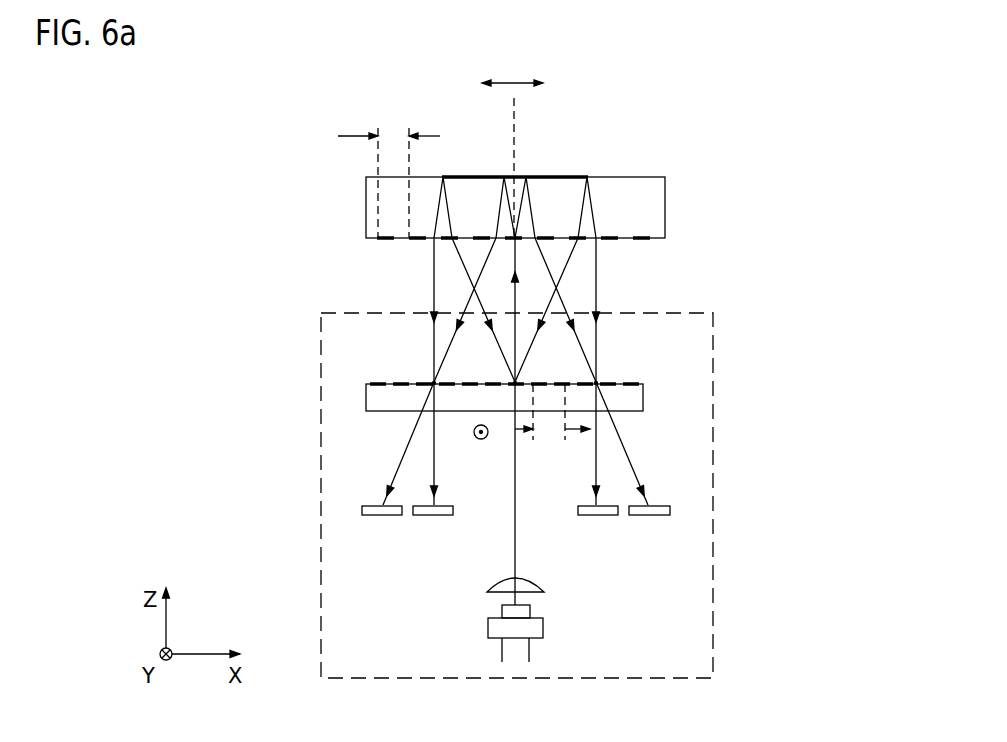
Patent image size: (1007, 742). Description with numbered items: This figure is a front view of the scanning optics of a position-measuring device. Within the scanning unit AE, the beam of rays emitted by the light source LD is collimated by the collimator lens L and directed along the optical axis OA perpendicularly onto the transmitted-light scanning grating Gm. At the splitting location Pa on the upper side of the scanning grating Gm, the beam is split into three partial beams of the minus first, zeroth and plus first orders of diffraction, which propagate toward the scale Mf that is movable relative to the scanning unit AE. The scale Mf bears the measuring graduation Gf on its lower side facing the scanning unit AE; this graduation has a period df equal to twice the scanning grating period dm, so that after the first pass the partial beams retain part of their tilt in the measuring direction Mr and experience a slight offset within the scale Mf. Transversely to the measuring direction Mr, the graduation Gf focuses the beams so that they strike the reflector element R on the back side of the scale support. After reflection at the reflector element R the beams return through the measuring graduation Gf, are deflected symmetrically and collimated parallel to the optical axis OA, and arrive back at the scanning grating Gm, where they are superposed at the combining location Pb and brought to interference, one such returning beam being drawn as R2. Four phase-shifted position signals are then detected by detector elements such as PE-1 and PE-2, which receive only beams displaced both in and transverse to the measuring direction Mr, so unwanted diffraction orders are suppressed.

The optical axis OA is at (513, 138).
The measuring direction Mr is at (504, 233).
The graduation period of the measuring graduation df is at (389, 174).
The reflector element R is at (581, 177).
The scale Mf is at (633, 190).
The measuring graduation Gf is at (650, 238).
The combining location Pb is at (434, 382).
The splitting location Pa is at (512, 381).
The transmitted-light scanning grating Gm is at (630, 383).
The graduation period of the scanning grating dm is at (552, 413).
The second-order partial beam R2 is at (626, 452).
The detector element PE-2 is at (375, 516).
The detector element PE-1 is at (436, 516).
The collimator lens L is at (512, 585).
The light source LD is at (530, 628).
The scanning unit AE is at (714, 606).